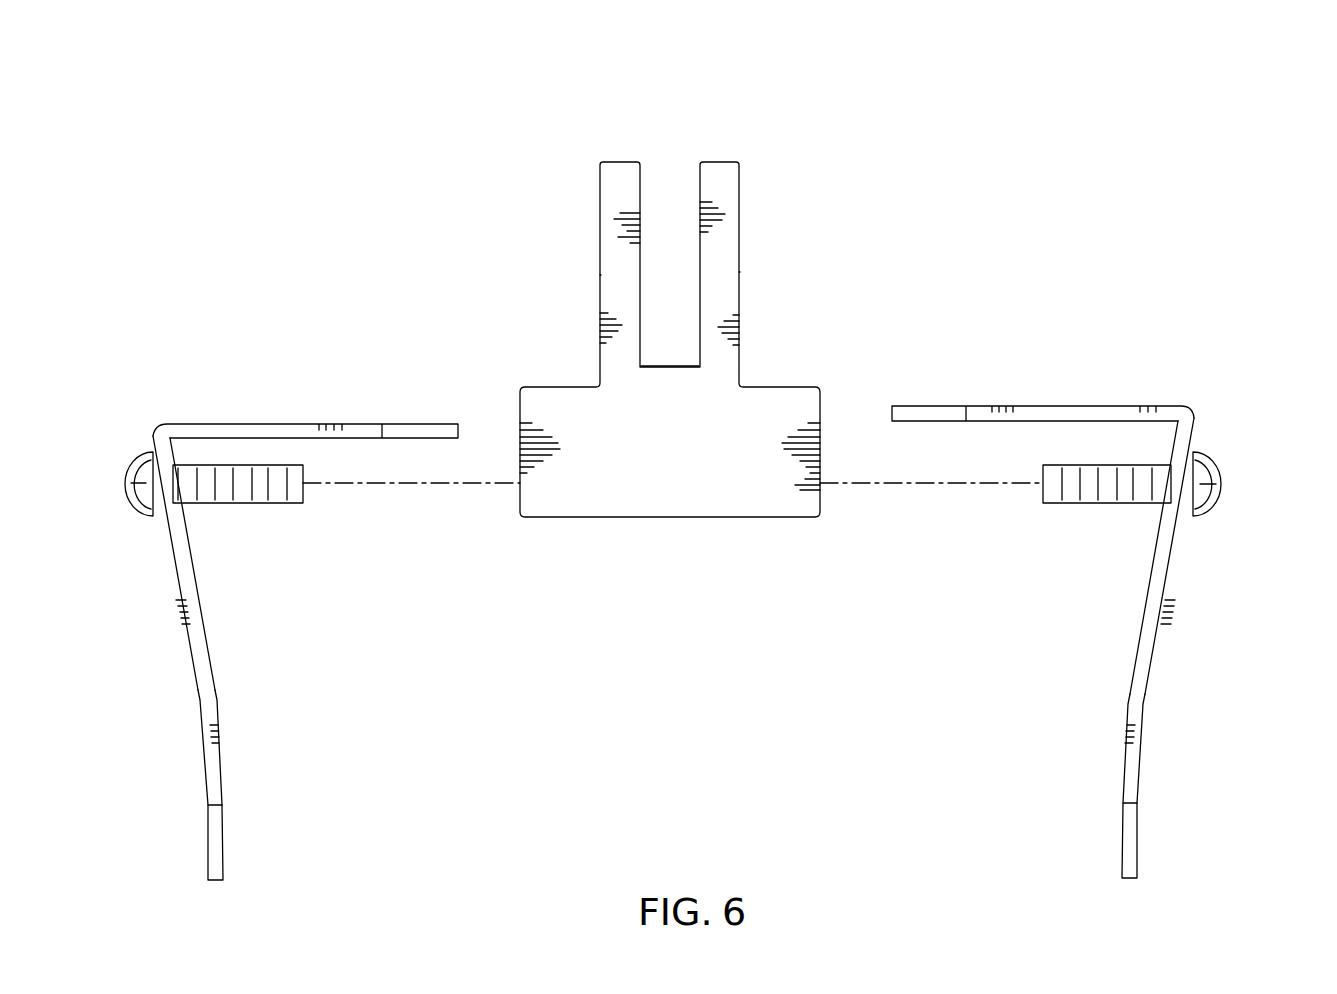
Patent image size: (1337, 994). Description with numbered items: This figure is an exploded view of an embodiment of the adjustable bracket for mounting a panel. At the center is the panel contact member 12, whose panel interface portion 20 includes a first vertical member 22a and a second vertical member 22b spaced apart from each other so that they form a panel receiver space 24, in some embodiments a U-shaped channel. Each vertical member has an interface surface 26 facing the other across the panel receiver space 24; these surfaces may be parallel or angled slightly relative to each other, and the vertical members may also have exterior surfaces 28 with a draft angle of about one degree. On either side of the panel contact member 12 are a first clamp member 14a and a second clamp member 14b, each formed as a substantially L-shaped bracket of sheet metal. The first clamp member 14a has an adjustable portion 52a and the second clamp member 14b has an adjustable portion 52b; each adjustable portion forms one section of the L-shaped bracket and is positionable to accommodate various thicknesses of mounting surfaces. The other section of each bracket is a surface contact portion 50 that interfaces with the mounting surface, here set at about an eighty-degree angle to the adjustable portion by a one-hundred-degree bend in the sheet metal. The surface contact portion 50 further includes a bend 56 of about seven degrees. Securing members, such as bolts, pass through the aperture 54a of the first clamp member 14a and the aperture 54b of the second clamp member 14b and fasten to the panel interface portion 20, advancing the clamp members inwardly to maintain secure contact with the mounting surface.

The panel contact member 12 is at (888, 184).
The first clamp member 14a is at (130, 740).
The second clamp member 14b is at (1213, 710).
The panel interface portion 20 is at (798, 153).
The first vertical member 22a is at (622, 162).
The second vertical member 22b is at (718, 162).
The panel receiver space 24 is at (671, 182).
The interface surface 26 is at (640, 178).
The exterior surface 28 is at (600, 275).
The surface contact portion 50 is at (222, 790).
The adjustable portion of first clamp member 52a is at (352, 424).
The adjustable portion of second clamp member 52b is at (1040, 405).
The aperture of first clamp member 54a is at (192, 449).
The aperture of second clamp member 54b is at (1155, 436).
The bend 56 is at (215, 700).